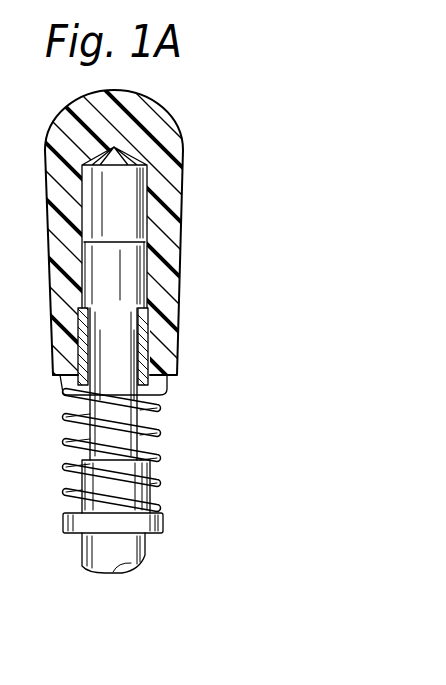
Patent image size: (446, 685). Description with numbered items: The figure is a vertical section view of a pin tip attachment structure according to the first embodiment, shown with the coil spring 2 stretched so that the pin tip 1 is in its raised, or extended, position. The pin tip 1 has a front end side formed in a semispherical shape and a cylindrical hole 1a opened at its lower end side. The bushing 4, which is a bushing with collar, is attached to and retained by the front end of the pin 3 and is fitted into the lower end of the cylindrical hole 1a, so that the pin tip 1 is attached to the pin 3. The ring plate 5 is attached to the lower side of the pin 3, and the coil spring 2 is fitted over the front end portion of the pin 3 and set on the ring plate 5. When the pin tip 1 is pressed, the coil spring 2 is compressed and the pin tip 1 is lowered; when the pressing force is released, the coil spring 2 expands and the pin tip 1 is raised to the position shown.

The pin tip 1 is at (150, 132).
The cylindrical hole 1a is at (148, 208).
The bushing with collar 4 is at (148, 318).
The coil spring 2 is at (152, 433).
The ring plate 5 is at (145, 522).
The pin 3 is at (127, 548).